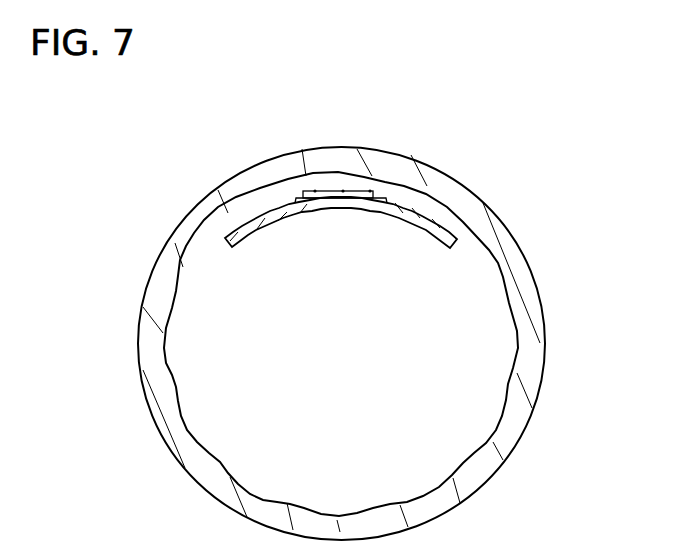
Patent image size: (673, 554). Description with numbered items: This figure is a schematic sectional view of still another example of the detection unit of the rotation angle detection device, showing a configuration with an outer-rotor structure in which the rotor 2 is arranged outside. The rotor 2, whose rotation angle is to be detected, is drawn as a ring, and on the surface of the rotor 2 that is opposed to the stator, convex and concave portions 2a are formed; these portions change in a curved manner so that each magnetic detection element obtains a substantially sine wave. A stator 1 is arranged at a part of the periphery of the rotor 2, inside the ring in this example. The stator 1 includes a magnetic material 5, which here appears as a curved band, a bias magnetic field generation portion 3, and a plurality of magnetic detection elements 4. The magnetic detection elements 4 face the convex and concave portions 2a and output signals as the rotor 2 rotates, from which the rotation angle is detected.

The stator 1 is at (341, 208).
The rotor 2 is at (533, 277).
The convex and concave portions 2a is at (505, 278).
The bias magnetic field generation portion 3 is at (305, 191).
The magnetic detection elements 4 is at (370, 191).
The magnetic material 5 is at (253, 233).